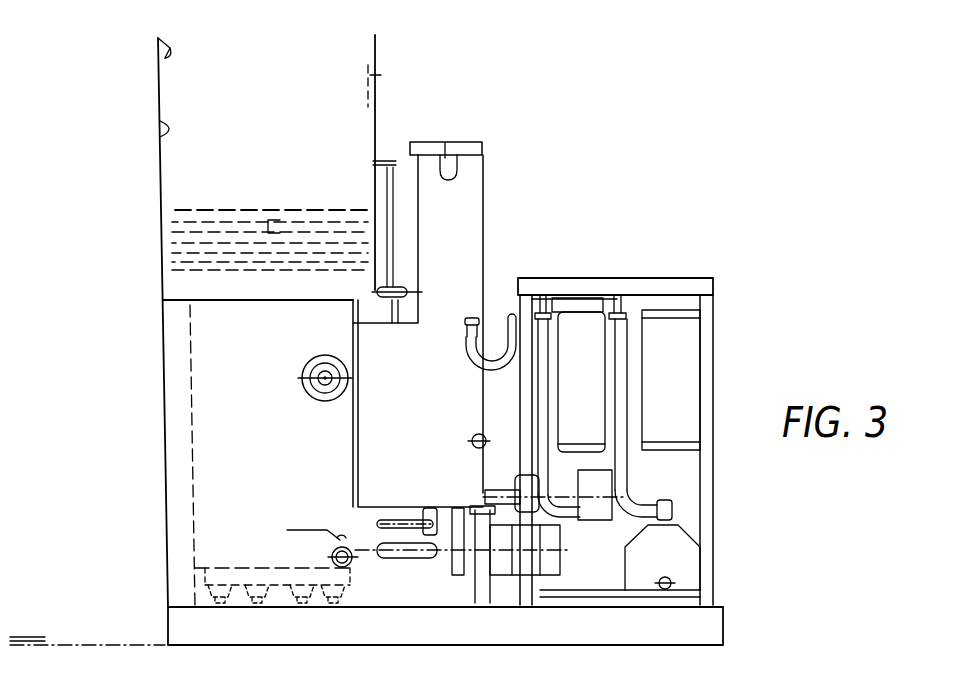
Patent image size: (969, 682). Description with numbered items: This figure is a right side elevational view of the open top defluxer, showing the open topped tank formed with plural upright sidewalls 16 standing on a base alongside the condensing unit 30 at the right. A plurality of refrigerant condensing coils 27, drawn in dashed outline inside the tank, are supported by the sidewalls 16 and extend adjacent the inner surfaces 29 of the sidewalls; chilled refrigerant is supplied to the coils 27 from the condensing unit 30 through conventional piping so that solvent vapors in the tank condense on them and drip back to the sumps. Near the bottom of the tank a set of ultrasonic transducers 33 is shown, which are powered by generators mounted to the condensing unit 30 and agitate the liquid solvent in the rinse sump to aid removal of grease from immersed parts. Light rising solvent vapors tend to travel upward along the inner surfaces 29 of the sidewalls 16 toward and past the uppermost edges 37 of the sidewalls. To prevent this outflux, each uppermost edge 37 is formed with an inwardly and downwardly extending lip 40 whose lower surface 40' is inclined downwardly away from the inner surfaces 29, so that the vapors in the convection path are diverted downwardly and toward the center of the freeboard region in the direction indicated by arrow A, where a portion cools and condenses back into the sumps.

The upright sidewalls 16 is at (268, 133).
The refrigerant condensing coils 27 is at (268, 205).
The inner surfaces 29 is at (160, 125).
The condensing unit 30 is at (727, 313).
The ultrasonic transducers 33 is at (260, 600).
The uppermost edges 37 is at (363, 54).
The lip 40 is at (180, 40).
The lower surface 40' is at (199, 48).
The arrows A is at (375, 75).